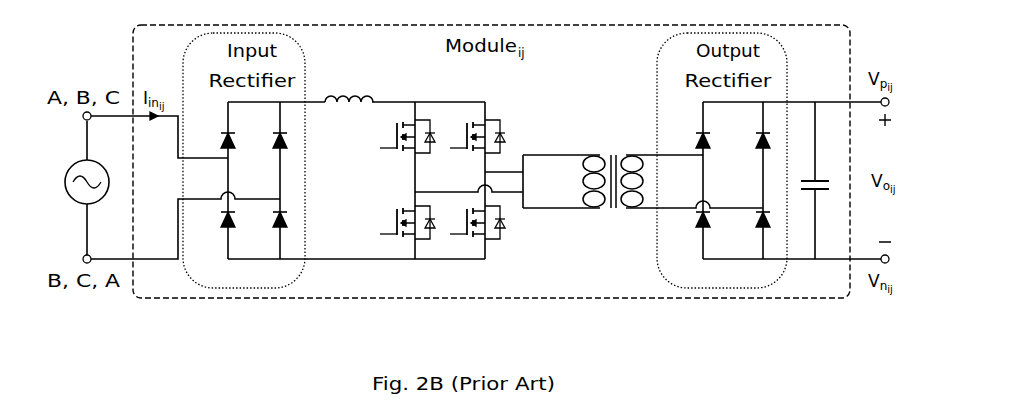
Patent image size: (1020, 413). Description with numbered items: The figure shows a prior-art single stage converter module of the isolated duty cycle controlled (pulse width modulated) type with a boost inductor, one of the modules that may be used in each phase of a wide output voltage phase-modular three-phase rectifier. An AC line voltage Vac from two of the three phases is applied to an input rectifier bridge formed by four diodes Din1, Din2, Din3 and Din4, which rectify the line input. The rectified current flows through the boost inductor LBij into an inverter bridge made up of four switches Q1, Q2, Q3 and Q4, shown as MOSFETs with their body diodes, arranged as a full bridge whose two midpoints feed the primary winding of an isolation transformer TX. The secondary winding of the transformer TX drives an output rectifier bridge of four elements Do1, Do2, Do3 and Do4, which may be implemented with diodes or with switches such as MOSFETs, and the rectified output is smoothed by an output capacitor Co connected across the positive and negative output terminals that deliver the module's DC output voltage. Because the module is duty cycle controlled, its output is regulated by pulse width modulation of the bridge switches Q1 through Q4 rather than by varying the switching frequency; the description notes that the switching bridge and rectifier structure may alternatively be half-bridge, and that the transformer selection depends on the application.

The AC input voltage source Vac is at (65, 188).
The input rectifier bridge diode Din1 is at (210, 129).
The input rectifier bridge diode Din2 is at (210, 234).
The input rectifier bridge diode Din3 is at (263, 129).
The input rectifier bridge diode Din4 is at (263, 234).
The boost inductor LBij is at (349, 85).
The inverter bridge switch Q1 is at (400, 133).
The inverter bridge switch Q2 is at (400, 222).
The inverter bridge switch Q3 is at (470, 133).
The inverter bridge switch Q4 is at (470, 222).
The isolation transformer TX is at (610, 180).
The output rectifier bridge diode Do1 is at (686, 129).
The output rectifier bridge diode Do2 is at (686, 234).
The output rectifier bridge diode Do3 is at (746, 129).
The output rectifier bridge diode Do4 is at (746, 234).
The output capacitor Co is at (821, 180).